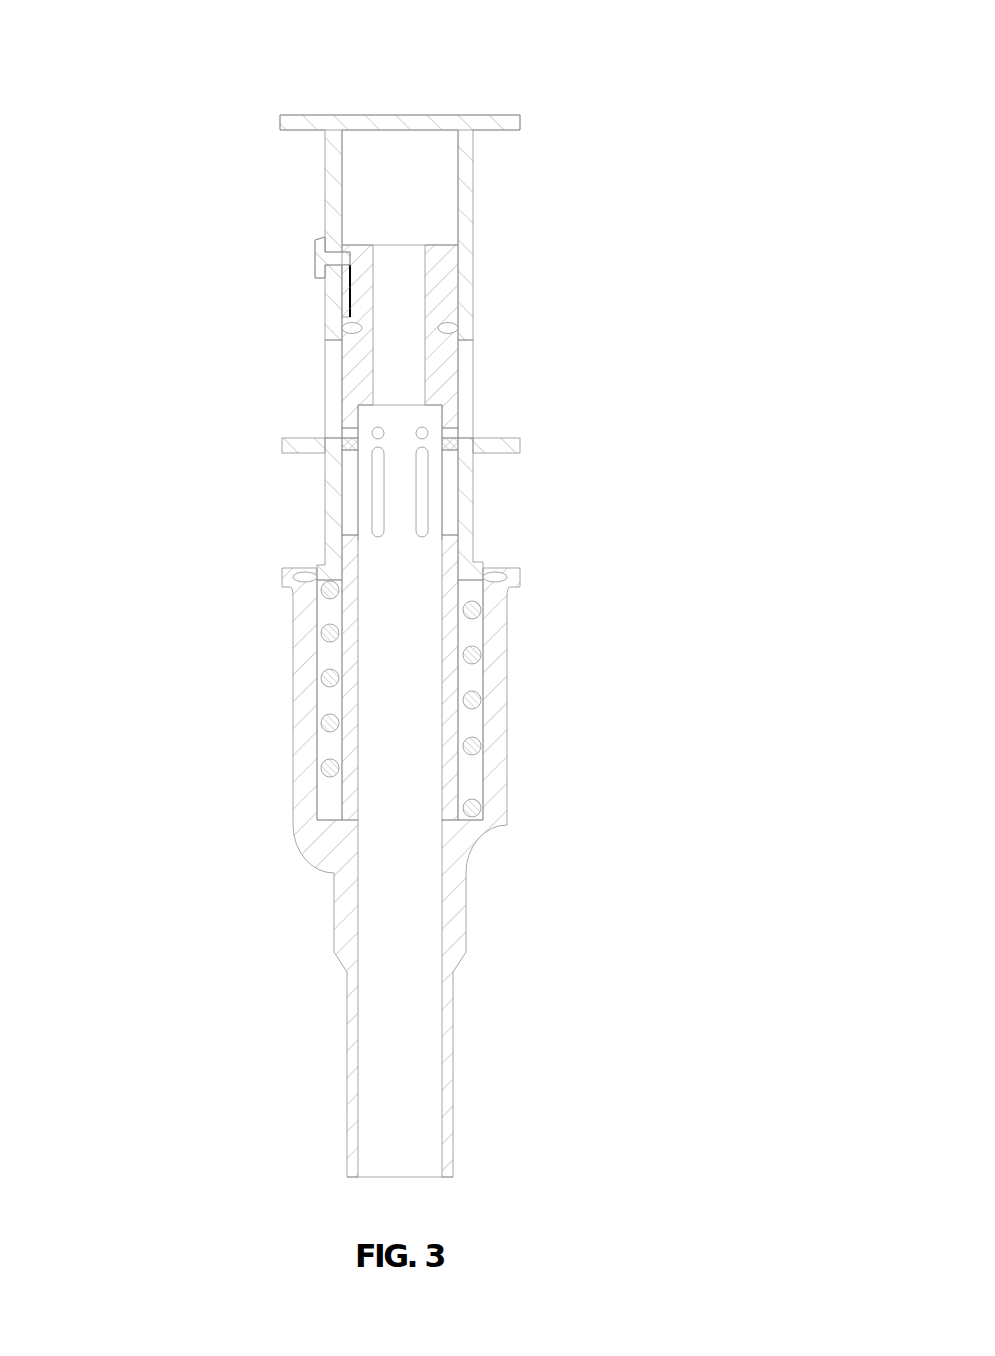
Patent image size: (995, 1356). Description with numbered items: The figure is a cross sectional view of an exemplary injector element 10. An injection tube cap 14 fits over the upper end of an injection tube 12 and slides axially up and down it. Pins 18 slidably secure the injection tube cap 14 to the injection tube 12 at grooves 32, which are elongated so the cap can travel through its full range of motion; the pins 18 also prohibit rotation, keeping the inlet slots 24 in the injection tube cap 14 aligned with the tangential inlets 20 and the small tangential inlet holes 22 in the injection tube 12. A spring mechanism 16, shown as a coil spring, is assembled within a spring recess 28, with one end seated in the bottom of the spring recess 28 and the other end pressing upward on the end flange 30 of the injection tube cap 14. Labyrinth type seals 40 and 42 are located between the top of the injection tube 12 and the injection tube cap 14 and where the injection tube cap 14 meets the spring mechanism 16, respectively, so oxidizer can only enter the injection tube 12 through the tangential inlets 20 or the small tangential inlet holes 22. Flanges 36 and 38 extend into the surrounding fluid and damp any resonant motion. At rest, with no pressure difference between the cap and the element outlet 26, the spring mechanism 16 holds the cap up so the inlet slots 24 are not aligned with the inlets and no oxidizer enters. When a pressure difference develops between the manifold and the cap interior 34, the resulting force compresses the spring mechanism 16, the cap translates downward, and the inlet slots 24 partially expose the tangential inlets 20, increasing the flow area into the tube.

The injector element 10 is at (454, 610).
The injection tube 12 is at (330, 845).
The injection tube cap 14 is at (316, 120).
The spring mechanism 16 is at (320, 637).
The pins 18 is at (320, 257).
The tangential inlets 20 is at (450, 500).
The small tangential inlet holes 22 is at (455, 435).
The inlet slots 24 is at (467, 392).
The element outlet 26 is at (412, 1178).
The spring recess 28 is at (475, 727).
The end flange 30 is at (328, 572).
The grooves 32 is at (345, 295).
The cap interior 34 is at (413, 190).
The flange 36 is at (307, 442).
The flange 38 is at (487, 115).
The labyrinth type seal 40 is at (455, 328).
The labyrinth type seal 42 is at (505, 568).